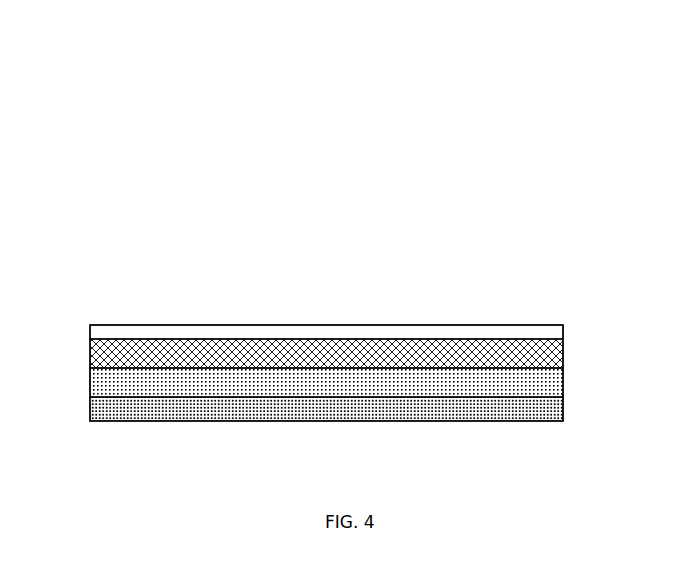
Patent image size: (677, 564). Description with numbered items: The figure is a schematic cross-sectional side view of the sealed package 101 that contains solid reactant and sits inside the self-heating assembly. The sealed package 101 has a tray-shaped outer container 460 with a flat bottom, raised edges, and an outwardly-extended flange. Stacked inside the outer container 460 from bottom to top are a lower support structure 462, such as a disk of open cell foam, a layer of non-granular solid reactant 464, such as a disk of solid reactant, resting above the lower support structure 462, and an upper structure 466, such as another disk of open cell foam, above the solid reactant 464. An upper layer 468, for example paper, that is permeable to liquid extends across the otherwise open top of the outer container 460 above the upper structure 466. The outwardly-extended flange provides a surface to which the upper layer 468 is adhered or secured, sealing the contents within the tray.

The sealed package 101 is at (105, 153).
The outer container 460 is at (58, 324).
The upper layer 468 is at (122, 324).
The upper structure 466 is at (162, 347).
The solid reactant 464 is at (195, 376).
The lower support structure 462 is at (227, 407).